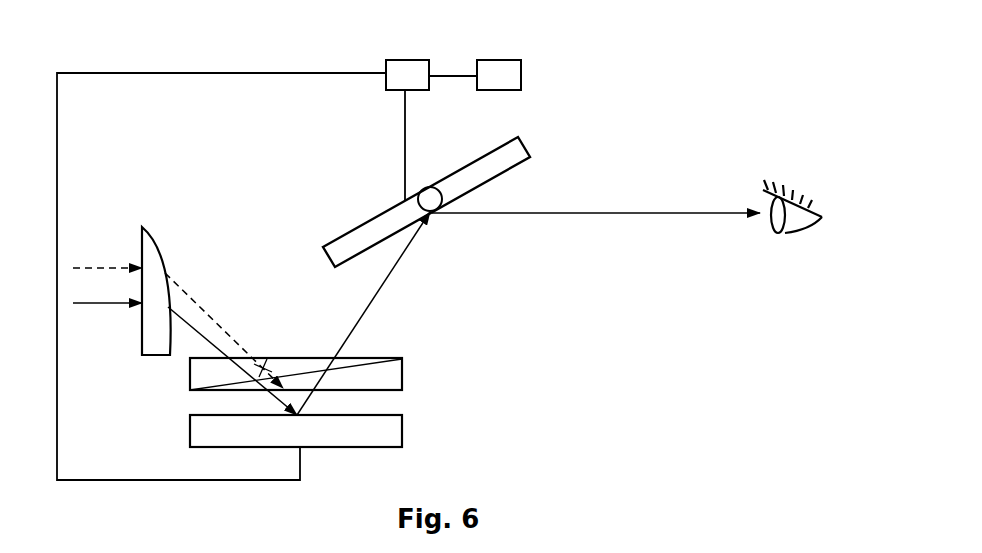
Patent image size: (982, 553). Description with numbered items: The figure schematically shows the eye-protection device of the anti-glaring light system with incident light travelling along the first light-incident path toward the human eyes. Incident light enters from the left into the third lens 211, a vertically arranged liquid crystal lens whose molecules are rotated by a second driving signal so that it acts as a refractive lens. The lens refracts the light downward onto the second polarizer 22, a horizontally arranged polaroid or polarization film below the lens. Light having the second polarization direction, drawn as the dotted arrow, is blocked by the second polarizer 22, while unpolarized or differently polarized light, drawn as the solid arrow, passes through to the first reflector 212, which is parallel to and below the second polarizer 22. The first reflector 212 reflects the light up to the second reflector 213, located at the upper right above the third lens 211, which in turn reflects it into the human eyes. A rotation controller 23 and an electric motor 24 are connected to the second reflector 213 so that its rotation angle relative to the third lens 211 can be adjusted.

The electric motor 24 is at (406, 60).
The rotation controller 23 is at (506, 60).
The second reflector 213 is at (467, 165).
The third lens 211 is at (155, 241).
The second polarizer 22 is at (402, 377).
The first reflector 212 is at (402, 430).